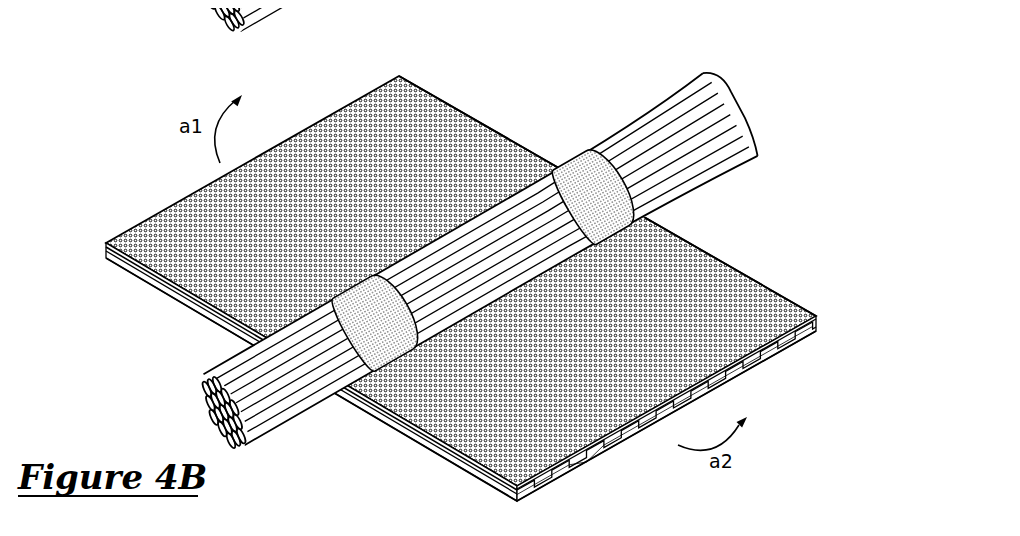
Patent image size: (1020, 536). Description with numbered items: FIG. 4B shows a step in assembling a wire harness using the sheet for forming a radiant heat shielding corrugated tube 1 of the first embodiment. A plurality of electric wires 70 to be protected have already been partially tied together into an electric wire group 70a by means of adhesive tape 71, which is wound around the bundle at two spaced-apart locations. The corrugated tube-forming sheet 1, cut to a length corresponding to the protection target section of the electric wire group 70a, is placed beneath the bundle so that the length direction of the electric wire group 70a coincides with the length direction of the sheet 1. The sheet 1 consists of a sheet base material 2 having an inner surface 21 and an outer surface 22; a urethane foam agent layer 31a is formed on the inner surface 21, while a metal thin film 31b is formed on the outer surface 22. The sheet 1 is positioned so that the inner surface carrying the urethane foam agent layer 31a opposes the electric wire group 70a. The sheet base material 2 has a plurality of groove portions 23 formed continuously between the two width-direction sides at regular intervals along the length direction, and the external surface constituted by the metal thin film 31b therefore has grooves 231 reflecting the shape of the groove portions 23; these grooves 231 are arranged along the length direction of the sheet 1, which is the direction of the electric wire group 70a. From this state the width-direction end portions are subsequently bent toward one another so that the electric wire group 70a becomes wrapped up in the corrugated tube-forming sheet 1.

The sheet for forming a radiant heat shielding corrugated tube 1 is at (505, 68).
The sheet base material 2 is at (610, 440).
The inner surface 21 is at (647, 423).
The outer surface 22 is at (600, 448).
The groove portions 23 is at (778, 347).
The grooves 231 is at (781, 366).
The urethane foam agent layer 31a is at (690, 240).
The metal thin film 31b is at (449, 457).
The electric wires 70 is at (627, 122).
The electric wire group 70a is at (671, 74).
The adhesive tape 71 is at (561, 152).